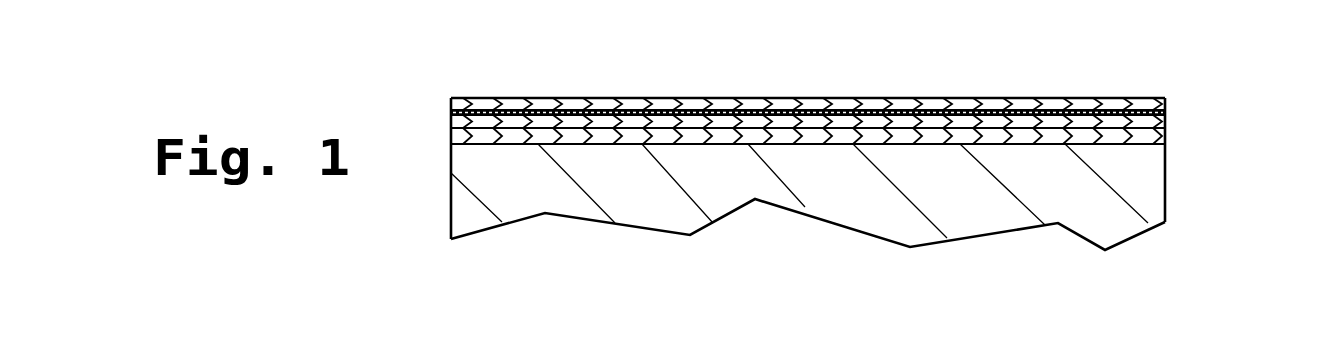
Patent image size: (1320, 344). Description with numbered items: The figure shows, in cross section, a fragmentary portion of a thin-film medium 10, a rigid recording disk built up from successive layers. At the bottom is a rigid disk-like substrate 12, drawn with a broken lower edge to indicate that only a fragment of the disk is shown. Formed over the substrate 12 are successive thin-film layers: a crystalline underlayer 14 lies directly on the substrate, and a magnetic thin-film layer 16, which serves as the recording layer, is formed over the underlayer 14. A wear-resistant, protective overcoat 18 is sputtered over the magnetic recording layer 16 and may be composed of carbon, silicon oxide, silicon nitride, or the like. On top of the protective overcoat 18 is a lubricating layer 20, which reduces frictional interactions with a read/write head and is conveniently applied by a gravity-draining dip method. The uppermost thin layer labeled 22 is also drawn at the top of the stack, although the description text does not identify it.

The thin-film medium 10 is at (1172, 198).
The rigid disk-like substrate 12 is at (955, 226).
The crystalline underlayer 14 is at (1164, 145).
The magnetic thin-film layer 16 is at (1163, 121).
The overcoat 18 is at (438, 88).
The lubricating layer 20 is at (1168, 112).
The top layer 22 is at (1150, 104).